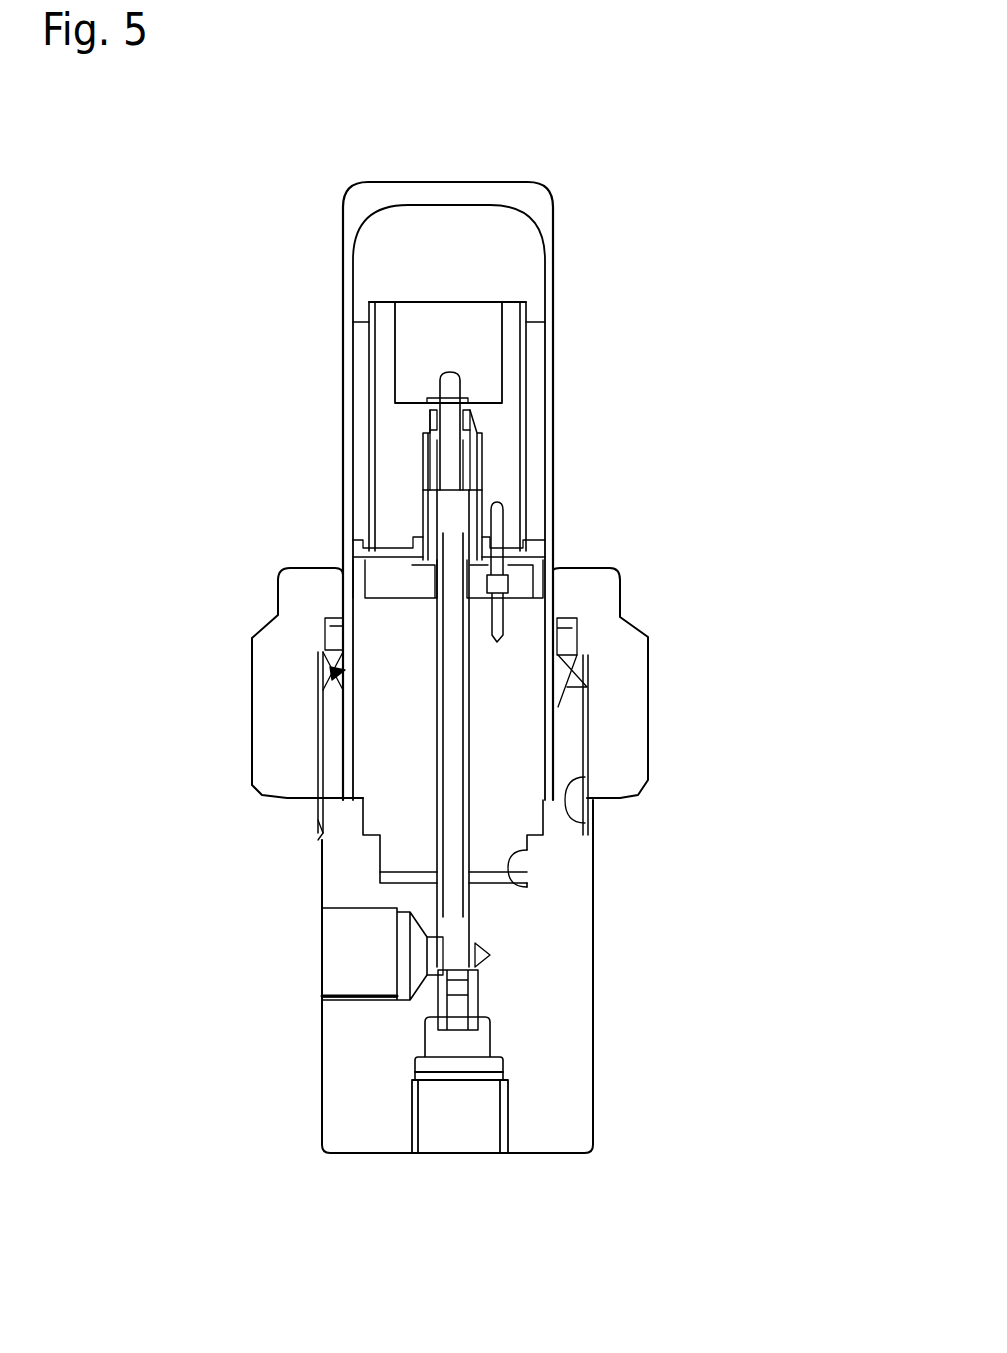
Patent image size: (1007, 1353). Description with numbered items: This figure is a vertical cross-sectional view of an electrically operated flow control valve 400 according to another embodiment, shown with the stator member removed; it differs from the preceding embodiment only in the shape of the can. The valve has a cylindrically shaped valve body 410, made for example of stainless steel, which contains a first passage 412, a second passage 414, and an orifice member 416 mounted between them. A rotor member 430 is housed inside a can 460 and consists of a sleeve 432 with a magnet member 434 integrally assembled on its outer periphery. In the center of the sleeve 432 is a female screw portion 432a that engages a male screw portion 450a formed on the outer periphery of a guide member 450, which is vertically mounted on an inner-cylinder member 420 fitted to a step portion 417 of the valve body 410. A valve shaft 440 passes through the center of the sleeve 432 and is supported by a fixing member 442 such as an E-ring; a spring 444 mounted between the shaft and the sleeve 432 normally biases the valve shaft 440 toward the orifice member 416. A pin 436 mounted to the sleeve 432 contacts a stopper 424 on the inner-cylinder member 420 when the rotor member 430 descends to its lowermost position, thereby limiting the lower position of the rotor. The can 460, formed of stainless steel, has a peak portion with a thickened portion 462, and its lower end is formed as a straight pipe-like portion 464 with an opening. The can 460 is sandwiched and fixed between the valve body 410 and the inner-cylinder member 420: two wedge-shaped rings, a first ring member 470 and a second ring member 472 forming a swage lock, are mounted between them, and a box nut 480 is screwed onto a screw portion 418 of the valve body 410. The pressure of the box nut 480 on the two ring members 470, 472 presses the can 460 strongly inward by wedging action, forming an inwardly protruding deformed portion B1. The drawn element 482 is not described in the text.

The electrically operated flow control valve 400 is at (763, 451).
The valve body 410 is at (575, 1068).
The first passage 412 is at (352, 957).
The second passage 414 is at (463, 1140).
The orifice member 416 is at (437, 1003).
The step portion 417 is at (518, 877).
The screw portion 418 is at (320, 822).
The inner-cylinder member 420 is at (525, 823).
The stopper 424 is at (500, 608).
The rotor member 430 is at (398, 250).
The sleeve 432 is at (383, 313).
The female screw portion 432a is at (430, 500).
The magnet member 434 is at (360, 385).
The pin 436 is at (500, 522).
The valve shaft 440 is at (445, 776).
The fixing member 442 is at (445, 383).
The spring 444 is at (480, 440).
The guide member 450 is at (428, 525).
The male screw portion 450a is at (480, 468).
The can 460 is at (553, 262).
The thickened portion 462 is at (466, 190).
The straight pipe-like portion 464 is at (560, 750).
The first ring member 470 is at (560, 655).
The second ring member 472 is at (560, 640).
The box nut 480 is at (635, 725).
The snap ring 482 is at (560, 830).
The deformed portion B1 is at (330, 667).